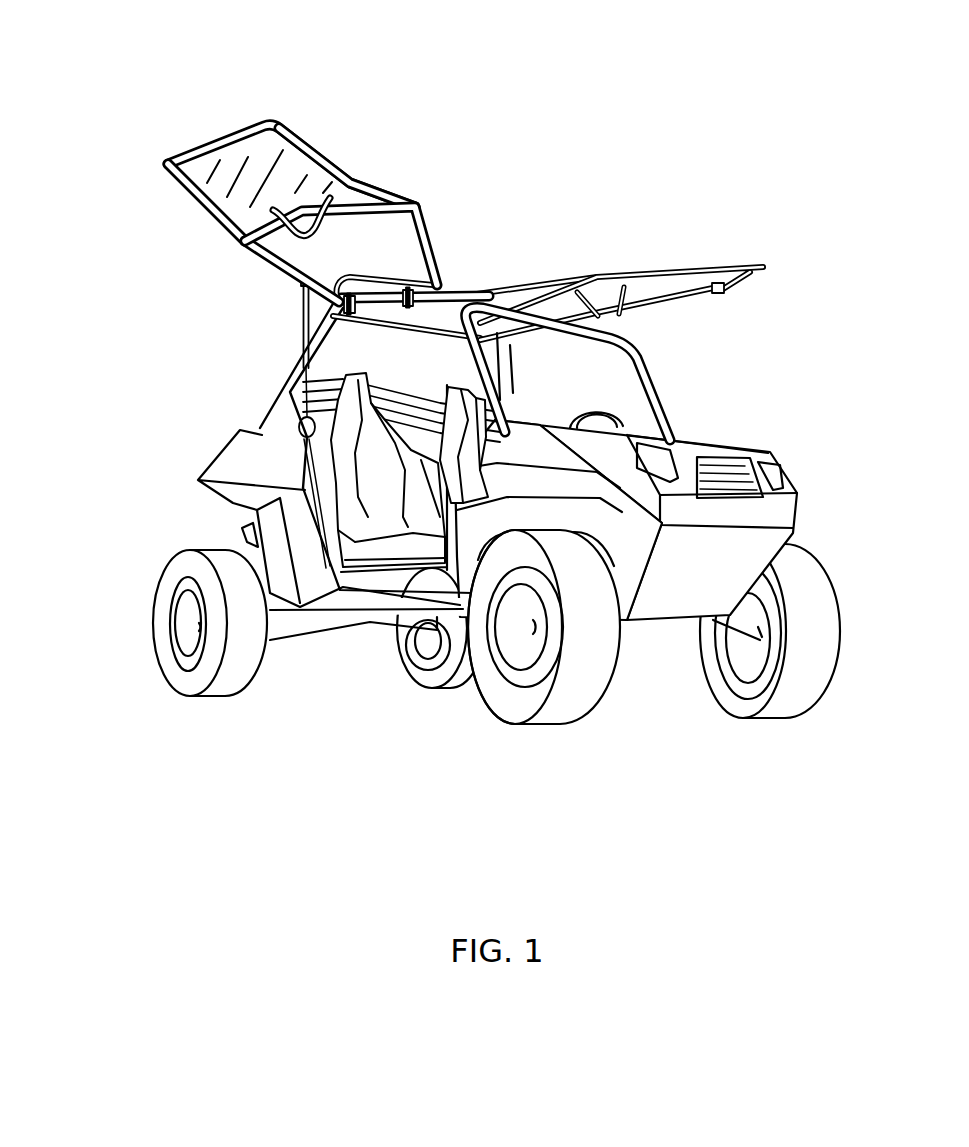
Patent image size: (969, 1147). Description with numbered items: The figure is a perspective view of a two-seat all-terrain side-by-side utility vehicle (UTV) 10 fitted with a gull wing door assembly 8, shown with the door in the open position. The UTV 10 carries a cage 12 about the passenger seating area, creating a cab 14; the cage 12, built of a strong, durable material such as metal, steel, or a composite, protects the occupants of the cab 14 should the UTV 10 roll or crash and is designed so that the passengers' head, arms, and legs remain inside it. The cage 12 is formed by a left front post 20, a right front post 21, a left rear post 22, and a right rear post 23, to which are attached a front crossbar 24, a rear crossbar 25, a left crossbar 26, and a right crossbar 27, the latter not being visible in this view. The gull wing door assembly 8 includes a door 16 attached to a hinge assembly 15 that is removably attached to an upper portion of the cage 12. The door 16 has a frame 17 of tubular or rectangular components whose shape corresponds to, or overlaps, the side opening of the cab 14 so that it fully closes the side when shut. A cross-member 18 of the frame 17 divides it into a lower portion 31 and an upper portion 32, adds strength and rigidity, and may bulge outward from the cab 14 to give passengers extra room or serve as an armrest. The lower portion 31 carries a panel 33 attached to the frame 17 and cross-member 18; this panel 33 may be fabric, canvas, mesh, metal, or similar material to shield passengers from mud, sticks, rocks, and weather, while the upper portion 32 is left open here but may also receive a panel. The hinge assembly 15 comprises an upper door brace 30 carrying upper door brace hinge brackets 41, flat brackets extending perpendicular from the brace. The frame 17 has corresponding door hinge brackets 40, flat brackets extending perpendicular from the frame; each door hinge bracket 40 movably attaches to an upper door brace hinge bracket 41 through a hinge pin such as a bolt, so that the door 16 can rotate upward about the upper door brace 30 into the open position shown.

The gull wing door assembly 8 is at (190, 138).
The utility vehicle (UTV) 10 is at (207, 505).
The cage 12 is at (298, 358).
The cab 14 is at (354, 448).
The hinge assembly 15 is at (442, 293).
The door 16 is at (327, 148).
The frame 17 is at (188, 198).
The cross-member 18 is at (245, 250).
The left front post 20 is at (502, 395).
The right front post 21 is at (640, 372).
The left rear post 22 is at (335, 330).
The right rear post 23 is at (497, 352).
The front crossbar 24 is at (537, 303).
The rear crossbar 25 is at (443, 325).
The left crossbar 26 is at (420, 286).
The right crossbar 27 is at (516, 306).
The upper door brace 30 is at (563, 338).
The lower portion 31 is at (278, 122).
The upper portion 32 is at (373, 240).
The panel 33 is at (268, 196).
The door hinge bracket 40 is at (440, 276).
The upper door brace hinge bracket 41 is at (449, 283).